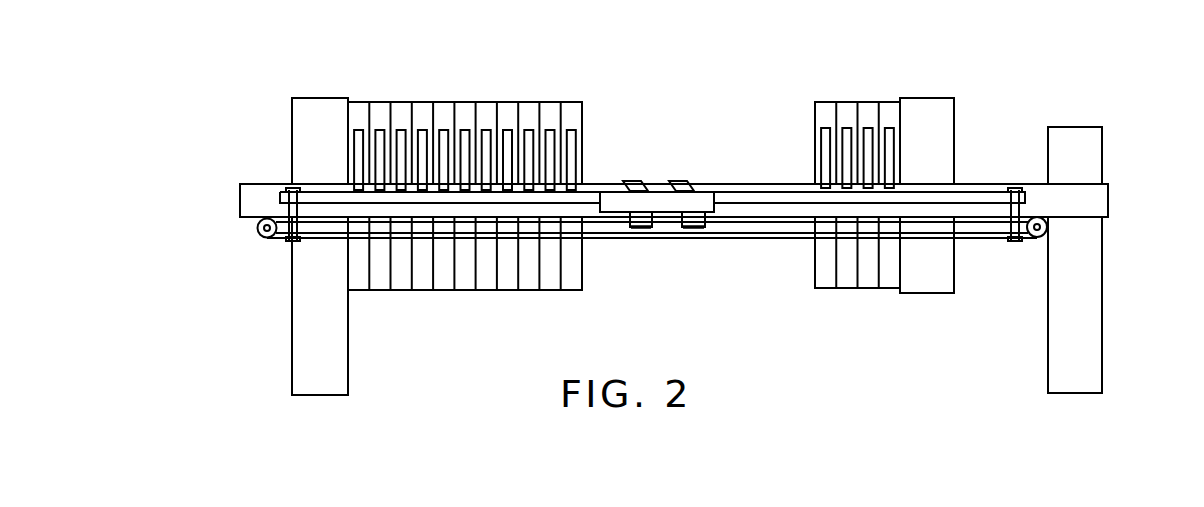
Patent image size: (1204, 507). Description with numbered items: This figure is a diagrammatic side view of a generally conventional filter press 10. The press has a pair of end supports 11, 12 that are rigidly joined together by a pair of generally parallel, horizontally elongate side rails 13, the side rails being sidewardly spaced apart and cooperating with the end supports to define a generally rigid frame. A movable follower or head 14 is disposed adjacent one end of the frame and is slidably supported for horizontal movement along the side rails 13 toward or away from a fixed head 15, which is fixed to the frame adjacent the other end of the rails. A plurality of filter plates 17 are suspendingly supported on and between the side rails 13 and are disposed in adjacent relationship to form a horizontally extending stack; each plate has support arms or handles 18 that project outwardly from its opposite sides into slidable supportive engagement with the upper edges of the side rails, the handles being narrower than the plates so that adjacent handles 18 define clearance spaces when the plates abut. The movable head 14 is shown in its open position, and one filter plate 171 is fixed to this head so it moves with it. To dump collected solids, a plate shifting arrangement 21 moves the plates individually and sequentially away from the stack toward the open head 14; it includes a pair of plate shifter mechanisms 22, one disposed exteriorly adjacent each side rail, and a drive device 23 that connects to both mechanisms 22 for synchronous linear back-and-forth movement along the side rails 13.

The filter press 10 is at (1043, 58).
The end support 11 is at (1087, 305).
The end support 12 is at (307, 328).
The side rails 13 is at (1100, 197).
The movable head 14 is at (955, 118).
The fixed head 15 is at (292, 113).
The filter plates 17 is at (513, 112).
The filter plate fixed to movable head 171 is at (888, 110).
The support arms or handles 18 is at (580, 146).
The plate shifting arrangement 21 is at (762, 256).
The plate shifter mechanism 22 is at (673, 218).
The drive device 23 is at (1034, 240).